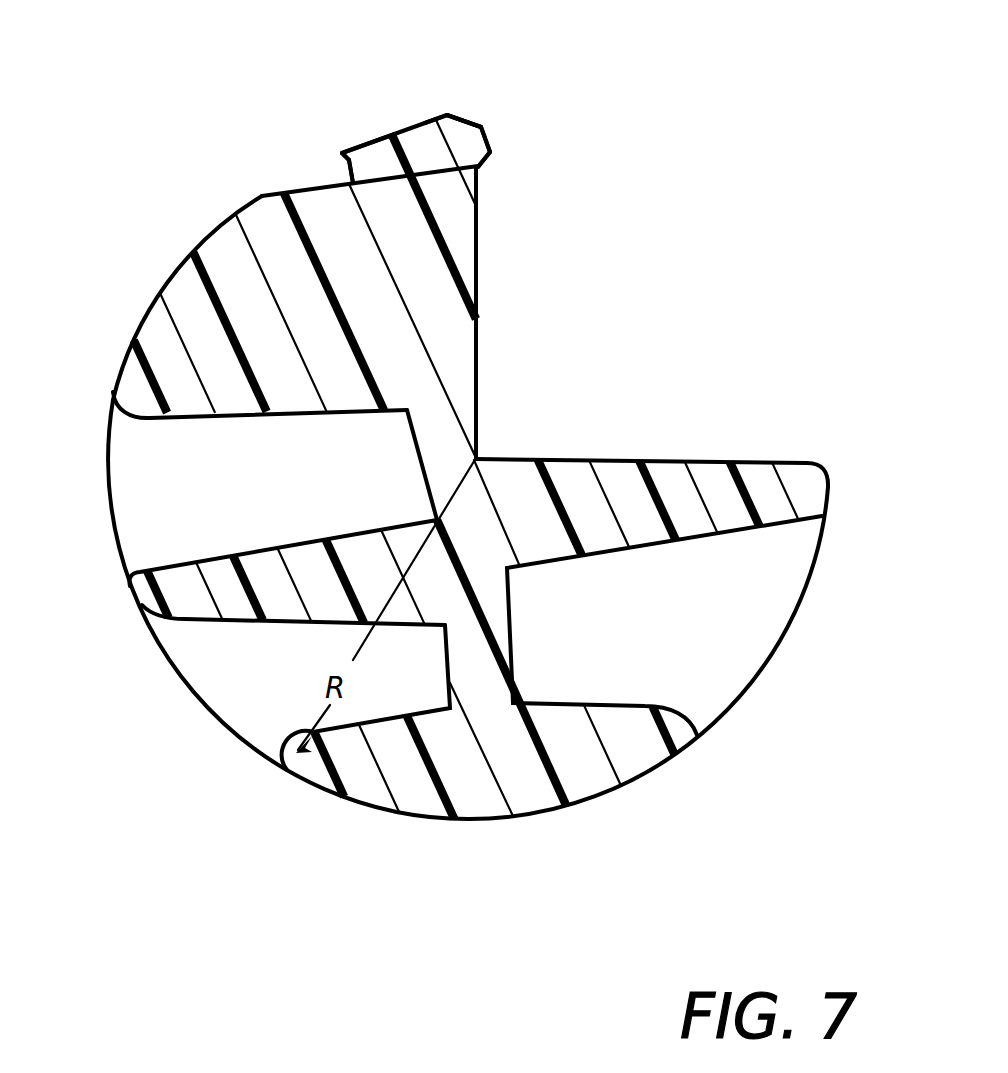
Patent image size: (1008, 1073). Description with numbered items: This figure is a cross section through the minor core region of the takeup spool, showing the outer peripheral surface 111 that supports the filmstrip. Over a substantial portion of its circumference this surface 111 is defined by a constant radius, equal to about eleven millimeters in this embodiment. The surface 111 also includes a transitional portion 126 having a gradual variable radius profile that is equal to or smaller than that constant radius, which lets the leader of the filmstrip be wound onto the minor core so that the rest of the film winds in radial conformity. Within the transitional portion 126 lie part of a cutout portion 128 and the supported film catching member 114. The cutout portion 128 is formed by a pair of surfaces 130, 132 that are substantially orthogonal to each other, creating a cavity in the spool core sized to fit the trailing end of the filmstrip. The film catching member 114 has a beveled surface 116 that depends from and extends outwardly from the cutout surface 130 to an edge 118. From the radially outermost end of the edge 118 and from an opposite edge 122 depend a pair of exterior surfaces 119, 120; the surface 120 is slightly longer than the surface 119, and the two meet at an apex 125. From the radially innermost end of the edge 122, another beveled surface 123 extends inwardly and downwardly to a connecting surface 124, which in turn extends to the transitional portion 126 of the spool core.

The outer peripheral surface 111 is at (116, 378).
The film catching member 114 is at (423, 120).
The beveled surface 116 is at (488, 164).
The edge 118 is at (491, 150).
The exterior surface 119 is at (485, 127).
The exterior surface 120 is at (394, 132).
The edge 122 is at (350, 154).
The beveled surface 123 is at (362, 146).
The connecting surface 124 is at (356, 182).
The apex 125 is at (453, 114).
The transitional portion 126 is at (226, 222).
The cutout portion 128 is at (545, 410).
The cutout surface 130 is at (478, 307).
The cutout surface 132 is at (752, 462).